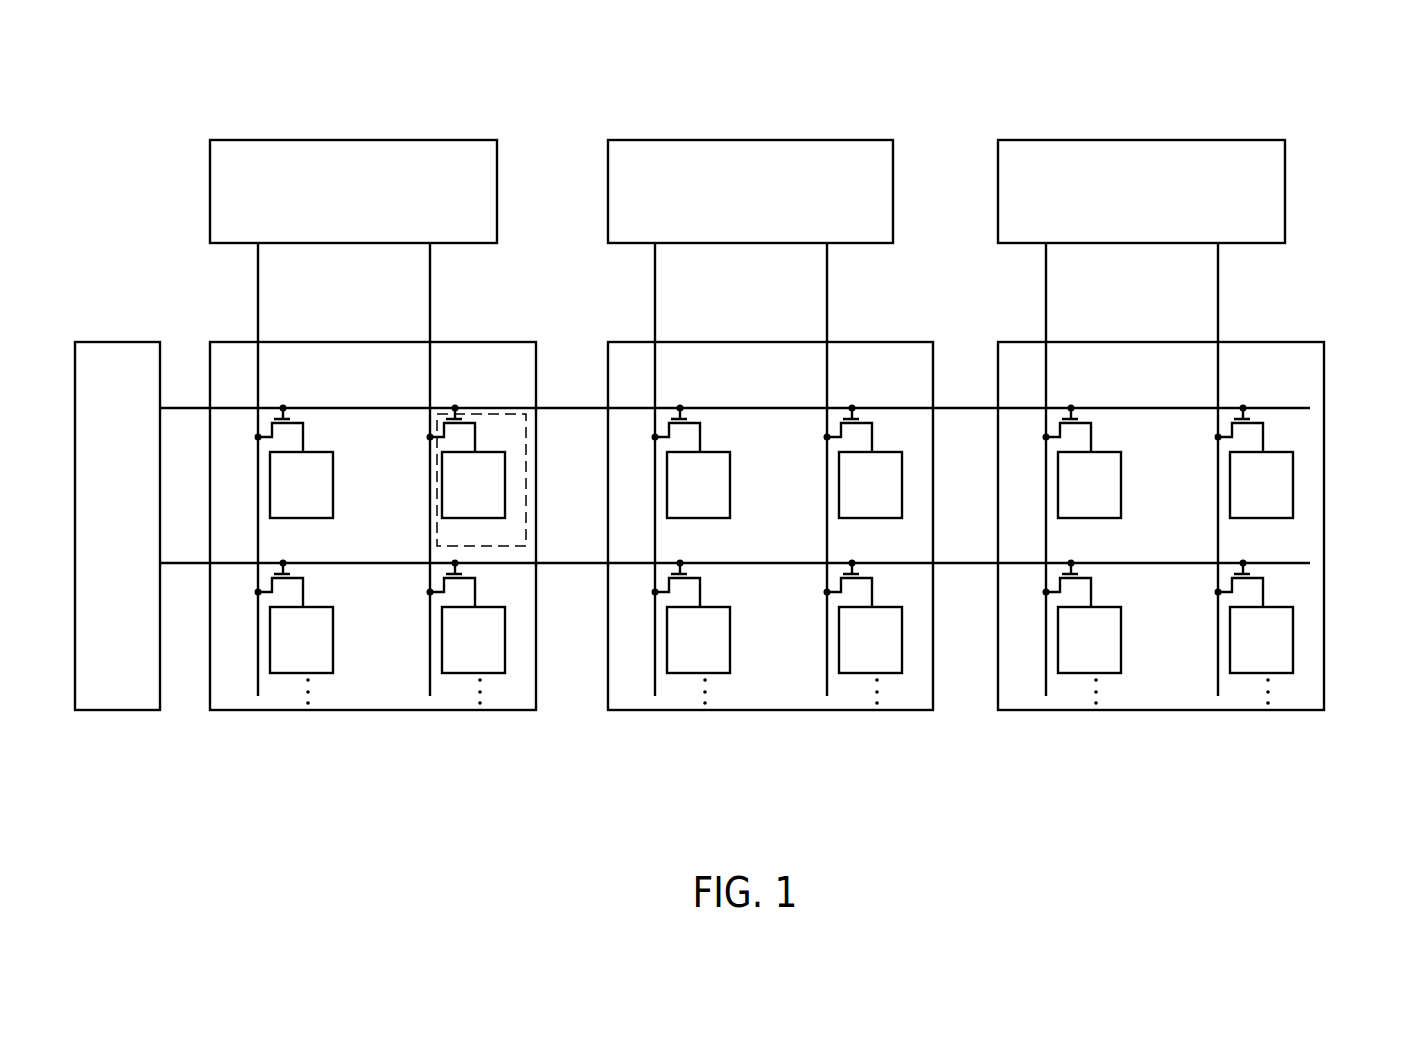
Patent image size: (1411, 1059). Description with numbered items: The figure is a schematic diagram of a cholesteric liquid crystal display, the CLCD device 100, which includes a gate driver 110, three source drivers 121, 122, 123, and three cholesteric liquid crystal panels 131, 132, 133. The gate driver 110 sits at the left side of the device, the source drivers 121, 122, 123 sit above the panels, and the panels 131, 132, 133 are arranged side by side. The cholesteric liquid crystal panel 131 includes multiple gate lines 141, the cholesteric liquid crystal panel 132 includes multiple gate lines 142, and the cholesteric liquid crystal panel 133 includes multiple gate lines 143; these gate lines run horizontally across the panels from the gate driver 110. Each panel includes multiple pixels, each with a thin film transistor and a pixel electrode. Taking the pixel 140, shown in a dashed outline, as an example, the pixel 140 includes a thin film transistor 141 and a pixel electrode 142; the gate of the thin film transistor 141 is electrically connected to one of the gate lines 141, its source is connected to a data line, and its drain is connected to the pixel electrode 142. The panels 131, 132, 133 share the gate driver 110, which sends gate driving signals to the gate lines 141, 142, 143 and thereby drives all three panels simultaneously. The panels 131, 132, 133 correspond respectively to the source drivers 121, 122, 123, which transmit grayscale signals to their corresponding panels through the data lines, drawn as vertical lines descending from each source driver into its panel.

The CLCD device 100 is at (112, 42).
The gate driver 110 is at (140, 540).
The source driver 121 is at (330, 205).
The source driver 122 is at (727, 205).
The source driver 123 is at (1119, 205).
The cholesteric liquid crystal panel 131 is at (478, 712).
The cholesteric liquid crystal panel 132 is at (876, 712).
The cholesteric liquid crystal panel 133 is at (1285, 712).
The pixel 140 is at (526, 423).
The gate line 141 is at (226, 406).
The gate line 142 is at (625, 409).
The gate line 143 is at (1290, 408).